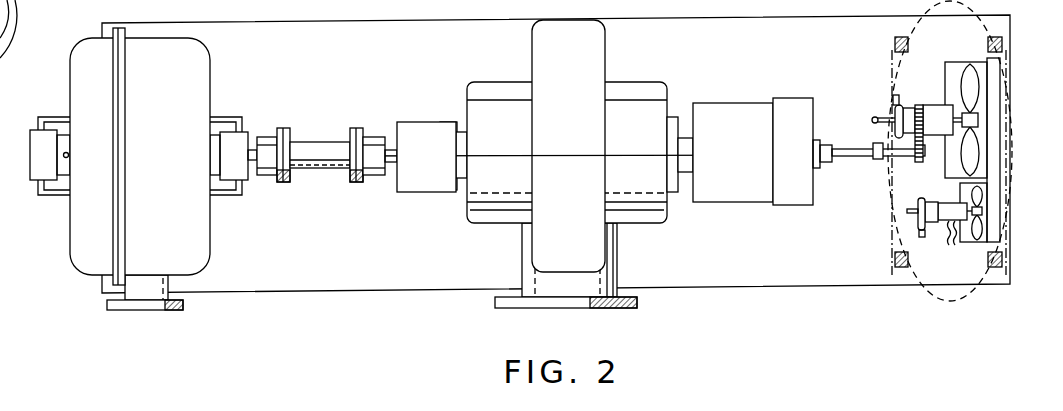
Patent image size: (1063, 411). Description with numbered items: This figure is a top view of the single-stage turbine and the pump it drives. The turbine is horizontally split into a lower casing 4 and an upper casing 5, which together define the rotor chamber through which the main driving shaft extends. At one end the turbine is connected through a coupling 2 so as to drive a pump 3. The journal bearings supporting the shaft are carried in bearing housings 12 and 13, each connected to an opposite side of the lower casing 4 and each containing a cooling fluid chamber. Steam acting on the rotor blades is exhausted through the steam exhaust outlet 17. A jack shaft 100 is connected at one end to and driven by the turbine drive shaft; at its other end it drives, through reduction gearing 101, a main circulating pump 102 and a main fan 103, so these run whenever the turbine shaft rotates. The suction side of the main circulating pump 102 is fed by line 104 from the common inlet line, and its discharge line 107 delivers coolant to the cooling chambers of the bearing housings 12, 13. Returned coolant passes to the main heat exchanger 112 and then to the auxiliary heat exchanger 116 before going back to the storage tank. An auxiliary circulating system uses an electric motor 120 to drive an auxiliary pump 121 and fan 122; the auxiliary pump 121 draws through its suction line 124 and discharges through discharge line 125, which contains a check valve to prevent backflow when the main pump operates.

The coupling 2 is at (314, 150).
The pump 3 is at (200, 72).
The lower casing 4 is at (335, 80).
The upper casing 5 is at (520, 116).
The bearing housing 12 is at (722, 118).
The bearing housing 13 is at (422, 135).
The steam exhaust outlet 17 is at (608, 271).
The jack shaft 100 is at (862, 158).
The reduction gearing 101 is at (913, 162).
The main circulating pump 102 is at (938, 110).
The main fan 103 is at (968, 78).
The line 104 is at (890, 116).
The discharge line 107 is at (894, 98).
The main heat exchanger 112 is at (1002, 110).
The auxiliary heat exchanger 116 is at (998, 215).
The electric motor 120 is at (954, 203).
The auxiliary pump 121 is at (921, 226).
The fan 122 is at (975, 241).
The suction line 124 is at (907, 212).
The discharge line 125 is at (920, 234).